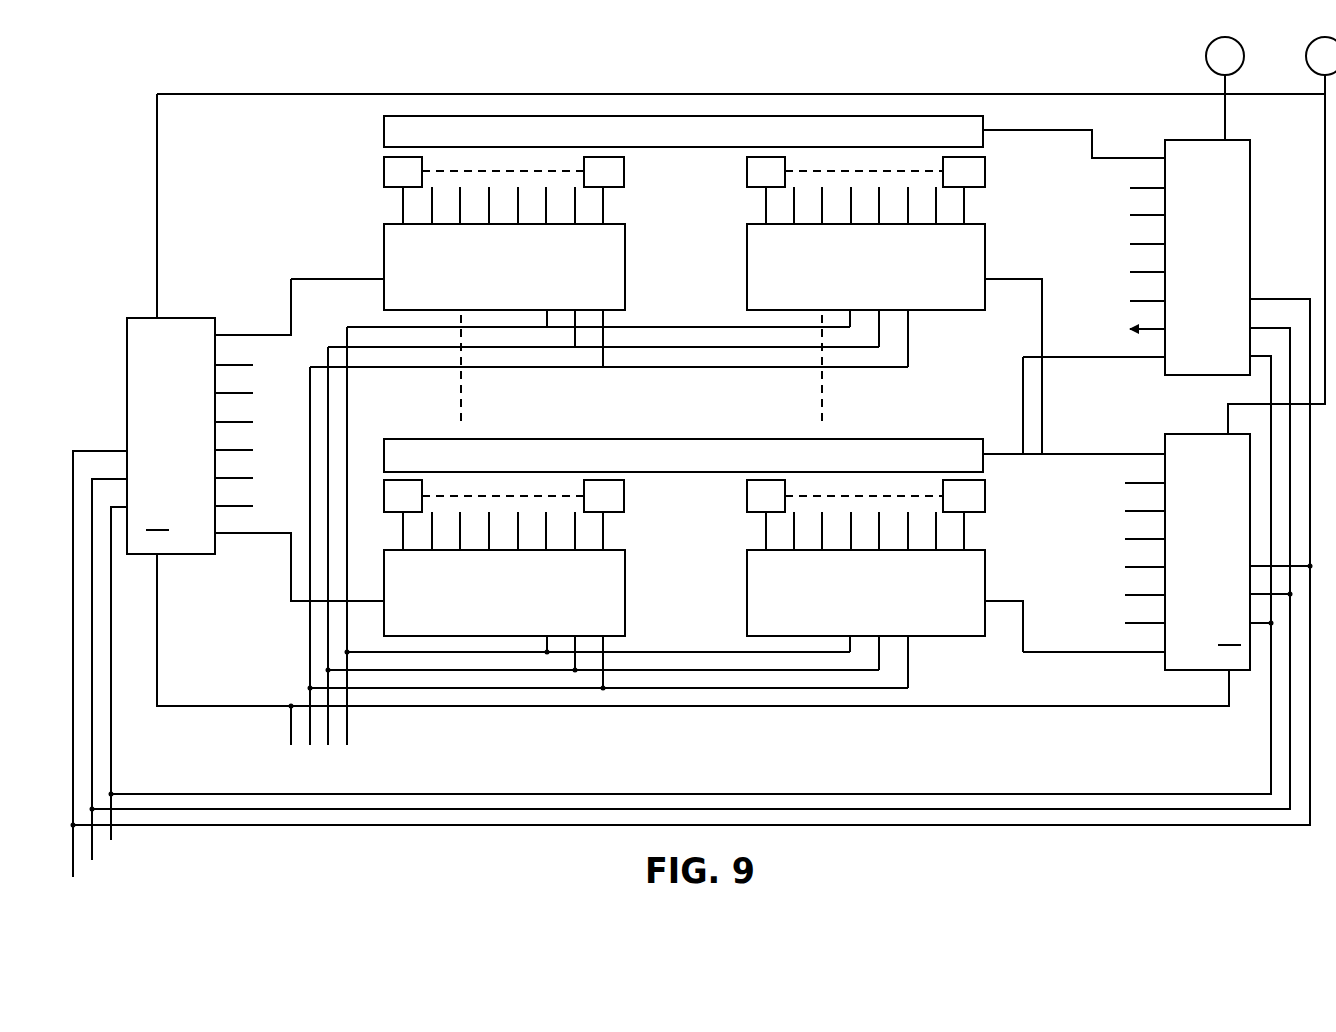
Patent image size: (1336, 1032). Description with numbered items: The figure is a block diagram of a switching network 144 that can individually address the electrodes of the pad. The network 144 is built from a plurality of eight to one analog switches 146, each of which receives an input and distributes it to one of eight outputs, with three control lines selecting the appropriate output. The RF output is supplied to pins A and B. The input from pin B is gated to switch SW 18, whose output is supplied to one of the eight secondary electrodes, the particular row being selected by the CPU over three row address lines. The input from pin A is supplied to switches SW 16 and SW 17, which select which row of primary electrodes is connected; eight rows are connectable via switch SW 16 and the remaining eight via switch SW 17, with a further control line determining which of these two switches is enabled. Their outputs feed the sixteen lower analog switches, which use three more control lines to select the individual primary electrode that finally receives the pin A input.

The switching network 144 is at (700, 475).
The eight to one analog switch 146 is at (801, 638).
The switch SW16 16 is at (171, 436).
The switch SW17 17 is at (1207, 552).
The switch SW18 18 is at (1207, 257).